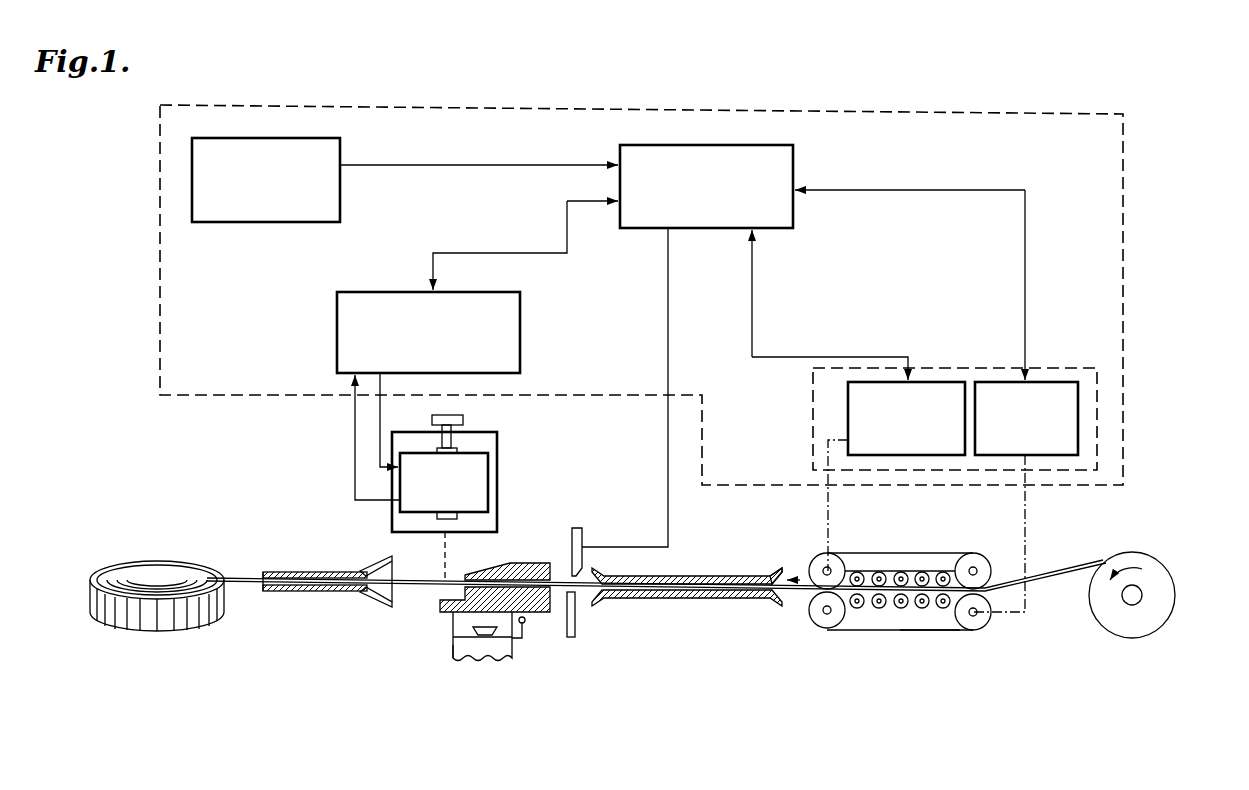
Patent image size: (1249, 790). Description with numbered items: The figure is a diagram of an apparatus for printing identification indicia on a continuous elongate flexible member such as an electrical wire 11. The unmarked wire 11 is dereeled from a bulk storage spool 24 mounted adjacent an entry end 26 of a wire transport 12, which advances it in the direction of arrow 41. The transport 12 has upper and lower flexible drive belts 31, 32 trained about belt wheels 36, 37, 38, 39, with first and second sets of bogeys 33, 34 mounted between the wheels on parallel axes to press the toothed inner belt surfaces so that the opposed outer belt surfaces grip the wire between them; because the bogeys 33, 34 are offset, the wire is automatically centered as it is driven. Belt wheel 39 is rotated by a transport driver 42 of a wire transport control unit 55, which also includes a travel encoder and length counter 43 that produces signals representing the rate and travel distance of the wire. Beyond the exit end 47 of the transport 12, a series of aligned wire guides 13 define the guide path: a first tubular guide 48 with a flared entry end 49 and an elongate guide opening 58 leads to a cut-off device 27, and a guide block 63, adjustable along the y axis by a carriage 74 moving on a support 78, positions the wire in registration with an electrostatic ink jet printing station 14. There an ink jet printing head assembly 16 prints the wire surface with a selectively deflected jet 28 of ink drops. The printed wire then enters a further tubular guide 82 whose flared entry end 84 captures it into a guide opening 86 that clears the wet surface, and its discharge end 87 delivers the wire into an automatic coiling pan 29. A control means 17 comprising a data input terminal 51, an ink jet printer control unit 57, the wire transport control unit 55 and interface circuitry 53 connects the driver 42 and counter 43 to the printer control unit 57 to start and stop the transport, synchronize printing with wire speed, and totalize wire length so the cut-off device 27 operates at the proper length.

The wire 11 is at (248, 583).
The wire transport 12 is at (848, 636).
The wire guides 13 is at (621, 602).
The electrostatic ink jet printing station 14 is at (378, 512).
The ink jet printing head assembly 16 is at (498, 458).
The control means 17 is at (733, 110).
The bulk storage spool 24 is at (1176, 575).
The entry end 26 is at (996, 601).
The cut-off device 27 is at (578, 527).
The jet of ink drops 28 is at (447, 551).
The automatic coiling pan 29 is at (152, 618).
The upper flexible drive belt 31 is at (862, 553).
The lower flexible drive belt 32 is at (945, 631).
The first set of bogeys 33 is at (942, 572).
The second set of bogeys 34 is at (943, 608).
The belt wheel 36 is at (822, 564).
The belt wheel 37 is at (977, 565).
The belt wheel 38 is at (822, 628).
The belt wheel 39 is at (972, 630).
The arrow 41 is at (800, 580).
The transport driver 42 is at (1052, 382).
The travel encoder and length counter 43 is at (936, 382).
The exit end 47 is at (805, 606).
The first guide 48 is at (668, 576).
The flared entry end 49 is at (788, 576).
The data input terminal 51 is at (314, 139).
The interface circuitry 53 is at (770, 146).
The wire transport control unit 55 is at (810, 383).
The ink jet printer control unit 57 is at (512, 294).
The elongate guide opening 58 is at (706, 598).
The guide block 63 is at (531, 563).
The carriage 74 is at (453, 629).
The support 78 is at (455, 650).
The further guide 82 is at (328, 592).
The flared entry end 84 is at (392, 562).
The guide opening 86 is at (366, 594).
The discharge end 87 is at (264, 592).